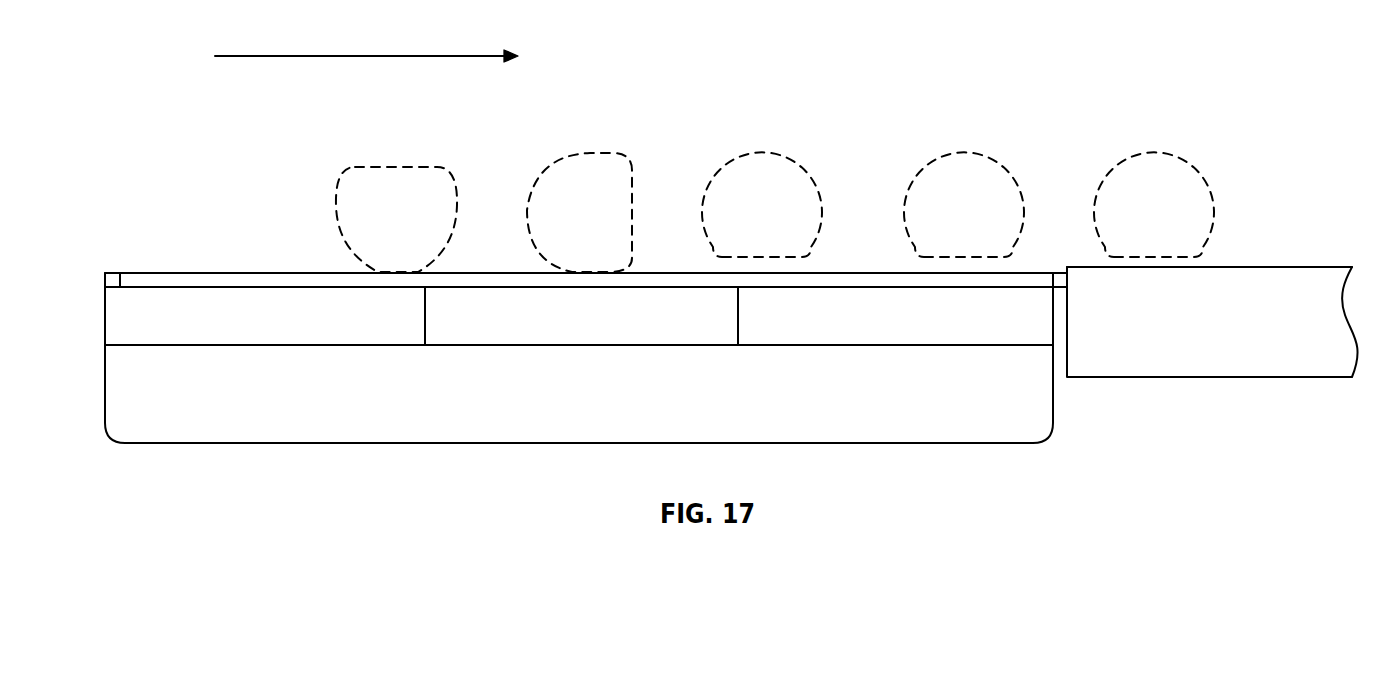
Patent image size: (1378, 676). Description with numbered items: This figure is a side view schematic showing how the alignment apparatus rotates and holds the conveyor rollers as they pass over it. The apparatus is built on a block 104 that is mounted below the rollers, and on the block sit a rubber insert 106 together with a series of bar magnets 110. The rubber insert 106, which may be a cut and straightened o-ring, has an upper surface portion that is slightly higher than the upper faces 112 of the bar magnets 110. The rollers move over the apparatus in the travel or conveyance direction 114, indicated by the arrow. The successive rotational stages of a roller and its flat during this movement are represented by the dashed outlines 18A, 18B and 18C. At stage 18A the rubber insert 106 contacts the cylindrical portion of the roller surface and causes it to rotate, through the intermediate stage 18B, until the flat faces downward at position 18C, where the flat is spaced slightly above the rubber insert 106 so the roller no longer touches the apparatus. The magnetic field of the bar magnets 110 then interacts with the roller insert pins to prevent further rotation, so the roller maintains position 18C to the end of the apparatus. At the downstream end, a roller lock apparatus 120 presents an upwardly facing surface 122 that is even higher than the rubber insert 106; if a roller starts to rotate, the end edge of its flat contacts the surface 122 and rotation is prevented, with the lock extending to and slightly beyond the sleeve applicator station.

The block 104 is at (1035, 427).
The rubber insert 106 is at (702, 282).
The bar magnets 110 is at (258, 327).
The upper faces of the bar magnets 112 is at (217, 287).
The travel or conveyance direction 114 is at (315, 55).
The roller rotational stage 18A is at (380, 175).
The roller rotational stage 18B is at (585, 168).
The roller rotational position 18C is at (765, 165).
The roller lock apparatus 120 is at (1207, 363).
The upwardly facing surface 122 is at (1262, 268).